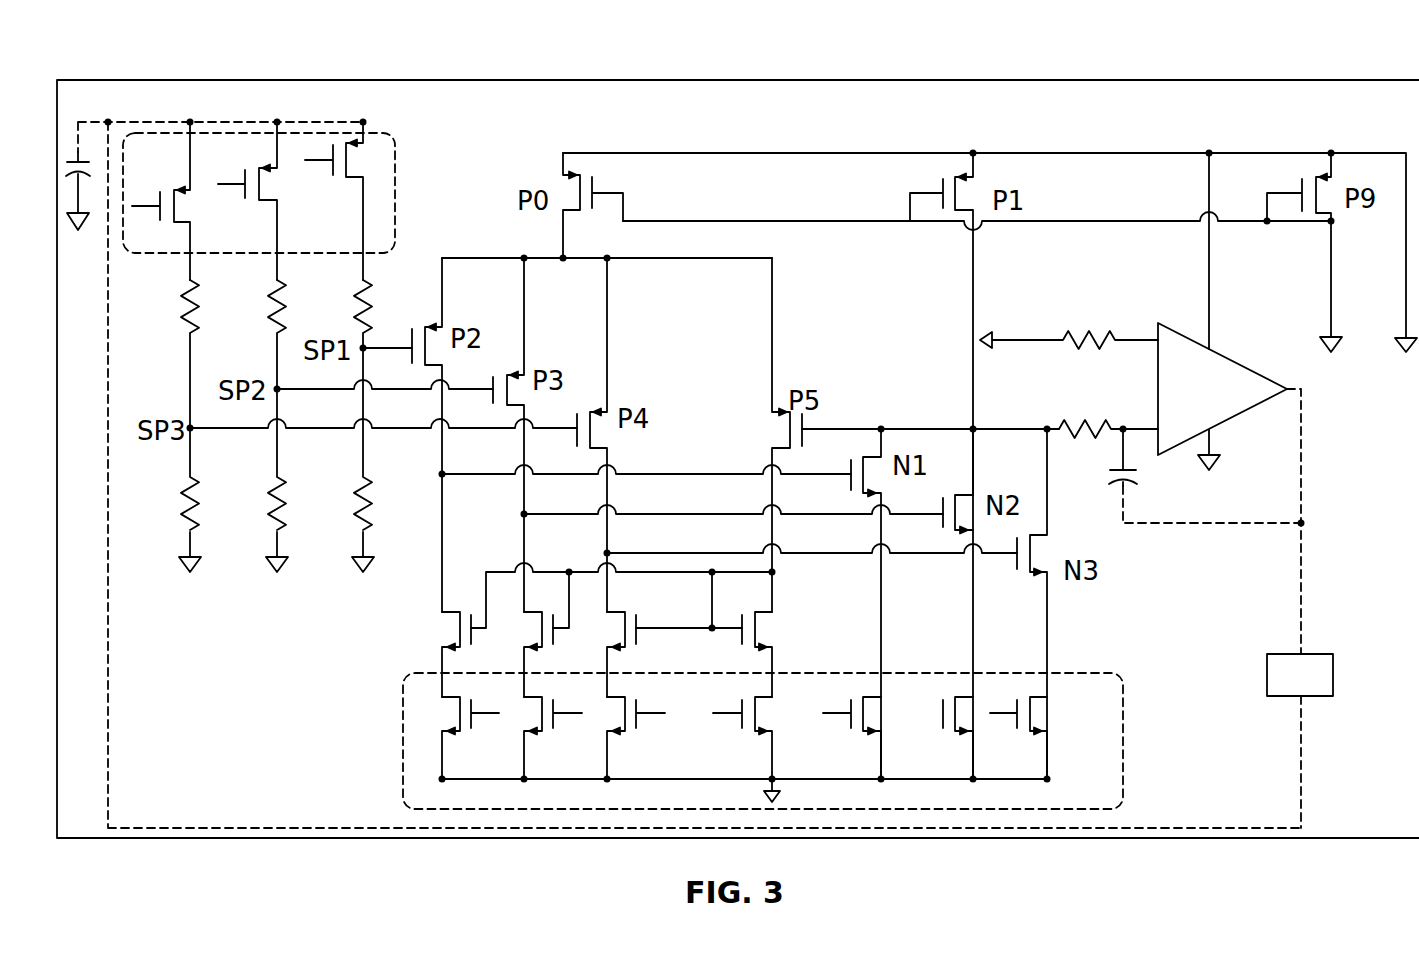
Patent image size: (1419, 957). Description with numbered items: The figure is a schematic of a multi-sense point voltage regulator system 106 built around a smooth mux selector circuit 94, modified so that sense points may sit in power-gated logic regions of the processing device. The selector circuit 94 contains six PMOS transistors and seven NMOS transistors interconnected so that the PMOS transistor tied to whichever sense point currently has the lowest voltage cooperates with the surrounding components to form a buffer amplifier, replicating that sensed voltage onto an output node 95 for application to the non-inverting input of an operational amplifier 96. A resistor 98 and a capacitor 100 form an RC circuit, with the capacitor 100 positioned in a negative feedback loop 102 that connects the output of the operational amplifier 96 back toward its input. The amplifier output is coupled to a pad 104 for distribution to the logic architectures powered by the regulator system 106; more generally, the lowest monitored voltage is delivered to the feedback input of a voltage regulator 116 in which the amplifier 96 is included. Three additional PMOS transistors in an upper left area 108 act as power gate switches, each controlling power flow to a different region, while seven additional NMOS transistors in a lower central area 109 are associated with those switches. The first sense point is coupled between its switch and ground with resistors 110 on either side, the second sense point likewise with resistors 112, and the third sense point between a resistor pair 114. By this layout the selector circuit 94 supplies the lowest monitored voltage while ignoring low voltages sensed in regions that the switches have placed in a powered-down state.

The multi-sense point voltage regulator system 106 is at (150, 60).
The upper left area 108 is at (178, 169).
The lower central area 109 is at (1112, 759).
The resistors 110 is at (372, 300).
The resistors 112 is at (270, 297).
The resistor pair 114 is at (183, 304).
The voltage regulator 116 is at (1136, 274).
The smooth mux selector circuit 94 is at (381, 596).
The output node 95 is at (1047, 429).
The operational amplifier 96 is at (1266, 386).
The resistor 98 is at (1097, 420).
The capacitor 100 is at (1115, 470).
The negative feedback loop 102 is at (1225, 522).
The pad 104 is at (1320, 653).